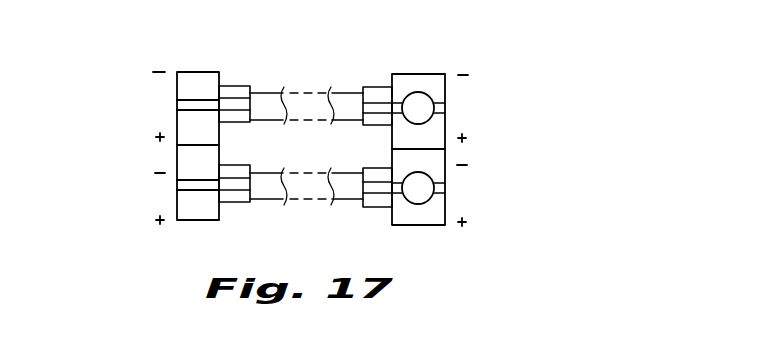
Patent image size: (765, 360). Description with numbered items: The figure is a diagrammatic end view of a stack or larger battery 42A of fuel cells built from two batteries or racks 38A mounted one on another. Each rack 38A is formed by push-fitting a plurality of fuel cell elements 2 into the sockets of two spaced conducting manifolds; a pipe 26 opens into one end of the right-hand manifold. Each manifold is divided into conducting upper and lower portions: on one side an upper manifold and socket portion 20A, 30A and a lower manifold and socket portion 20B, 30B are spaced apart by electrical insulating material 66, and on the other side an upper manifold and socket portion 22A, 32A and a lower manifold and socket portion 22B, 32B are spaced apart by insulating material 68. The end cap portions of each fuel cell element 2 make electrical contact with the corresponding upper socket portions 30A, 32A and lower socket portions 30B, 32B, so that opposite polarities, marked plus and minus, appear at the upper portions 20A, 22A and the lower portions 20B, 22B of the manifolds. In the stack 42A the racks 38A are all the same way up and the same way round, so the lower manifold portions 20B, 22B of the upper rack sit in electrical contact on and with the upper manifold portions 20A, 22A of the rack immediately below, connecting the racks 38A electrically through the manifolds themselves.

The fuel cell element 2 is at (302, 80).
The upper manifold and socket portion 20A is at (435, 88).
The lower manifold and socket portion 20B is at (427, 138).
The upper manifold and socket portion 22A is at (192, 163).
The lower manifold and socket portion 22B is at (187, 200).
The pipe 26 is at (418, 93).
The upper socket portion 30A is at (373, 92).
The lower socket portion 30B is at (377, 120).
The upper socket portion 32A is at (243, 140).
The lower socket portion 32B is at (243, 200).
The battery or rack of fuel cells 38A is at (233, 67).
The stack or larger battery of fuel cells 42A is at (494, 208).
The electrical insulating material 66 is at (395, 110).
The insulating material 68 is at (233, 104).